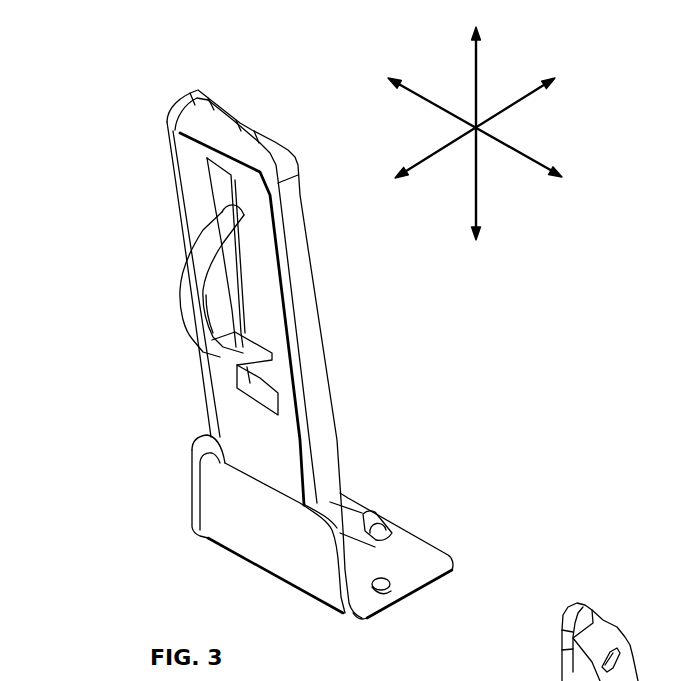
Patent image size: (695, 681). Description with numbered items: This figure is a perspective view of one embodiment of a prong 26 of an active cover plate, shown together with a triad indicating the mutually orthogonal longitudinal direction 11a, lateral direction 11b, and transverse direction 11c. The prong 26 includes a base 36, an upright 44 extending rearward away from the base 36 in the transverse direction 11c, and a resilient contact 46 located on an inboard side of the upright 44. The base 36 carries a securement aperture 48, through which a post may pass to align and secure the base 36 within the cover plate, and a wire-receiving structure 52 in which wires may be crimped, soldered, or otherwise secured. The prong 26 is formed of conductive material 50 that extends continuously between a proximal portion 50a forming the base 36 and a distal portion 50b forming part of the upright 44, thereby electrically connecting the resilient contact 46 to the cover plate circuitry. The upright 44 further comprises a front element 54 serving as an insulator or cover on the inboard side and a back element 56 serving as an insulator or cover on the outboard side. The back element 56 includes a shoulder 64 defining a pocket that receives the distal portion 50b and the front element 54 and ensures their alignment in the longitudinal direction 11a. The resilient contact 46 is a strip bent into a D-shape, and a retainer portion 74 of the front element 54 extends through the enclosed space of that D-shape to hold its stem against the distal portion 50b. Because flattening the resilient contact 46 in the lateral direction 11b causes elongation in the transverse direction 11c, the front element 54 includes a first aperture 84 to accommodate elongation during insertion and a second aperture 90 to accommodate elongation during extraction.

The longitudinal direction 11a is at (525, 160).
The lateral direction 11b is at (522, 104).
The transverse direction 11c is at (478, 67).
The prong 26 is at (538, 312).
The base 36 is at (299, 544).
The upright 44 is at (257, 354).
The resilient contact 46 is at (188, 300).
The securement aperture 48 is at (403, 586).
The conductive material 50 is at (260, 373).
The proximal portion 50a is at (426, 561).
The distal portion 50b is at (233, 184).
The wire-receiving structure 52 is at (373, 513).
The front element 54 is at (263, 473).
The back element 56 is at (313, 333).
The shoulder 64 is at (198, 491).
The retainer portion 74 is at (247, 292).
The first aperture 84 is at (288, 384).
The second aperture 90 is at (248, 204).